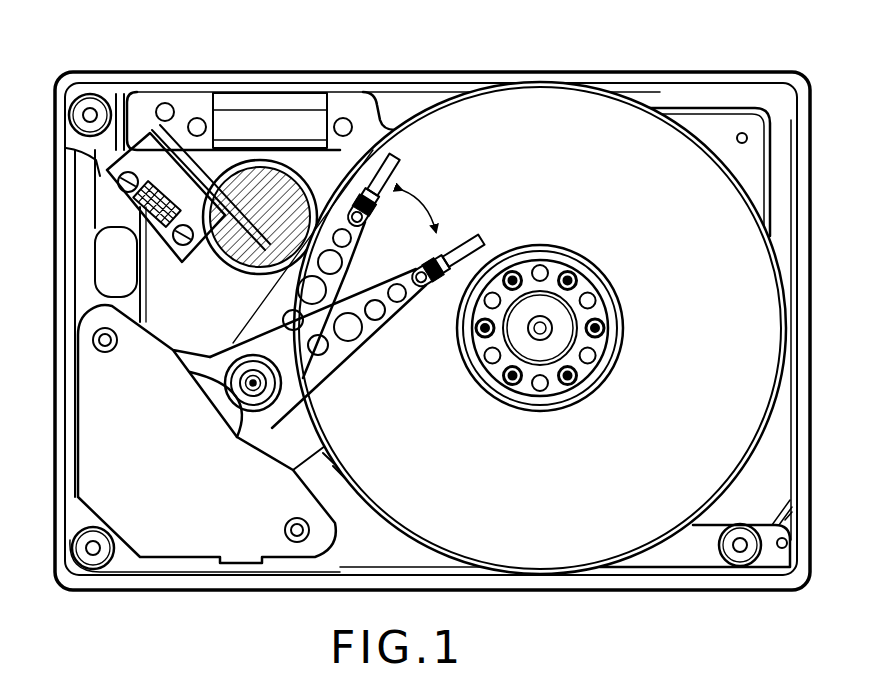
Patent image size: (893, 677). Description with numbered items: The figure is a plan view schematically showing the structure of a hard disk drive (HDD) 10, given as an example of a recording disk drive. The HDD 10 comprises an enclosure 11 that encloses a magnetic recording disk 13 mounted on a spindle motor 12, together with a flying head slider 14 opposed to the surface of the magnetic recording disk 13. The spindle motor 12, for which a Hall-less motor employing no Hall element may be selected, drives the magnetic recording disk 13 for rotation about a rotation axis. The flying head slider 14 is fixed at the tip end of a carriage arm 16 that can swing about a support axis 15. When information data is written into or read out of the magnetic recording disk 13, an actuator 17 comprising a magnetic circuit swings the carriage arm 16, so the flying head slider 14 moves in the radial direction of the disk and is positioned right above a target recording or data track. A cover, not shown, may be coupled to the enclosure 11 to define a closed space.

The hard disk drive (HDD) 10 is at (432, 311).
The enclosure 11 is at (617, 71).
The spindle motor 12 is at (563, 343).
The magnetic recording disk 13 is at (664, 235).
The flying head slider 14 is at (467, 236).
The support axis 15 is at (258, 368).
The carriage arm 16 is at (372, 343).
The actuator 17 is at (173, 471).